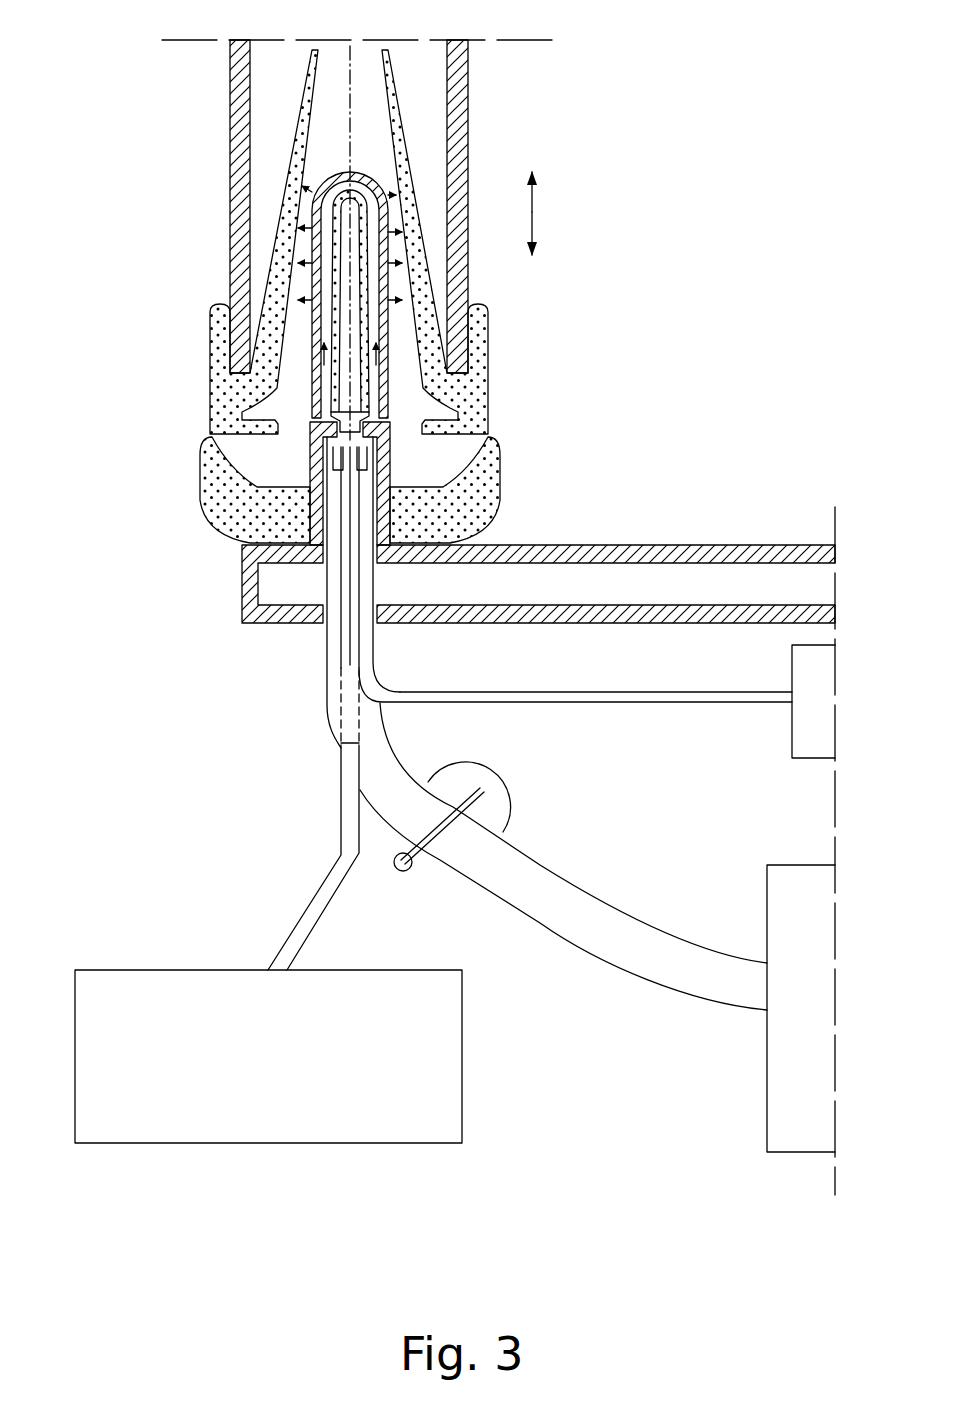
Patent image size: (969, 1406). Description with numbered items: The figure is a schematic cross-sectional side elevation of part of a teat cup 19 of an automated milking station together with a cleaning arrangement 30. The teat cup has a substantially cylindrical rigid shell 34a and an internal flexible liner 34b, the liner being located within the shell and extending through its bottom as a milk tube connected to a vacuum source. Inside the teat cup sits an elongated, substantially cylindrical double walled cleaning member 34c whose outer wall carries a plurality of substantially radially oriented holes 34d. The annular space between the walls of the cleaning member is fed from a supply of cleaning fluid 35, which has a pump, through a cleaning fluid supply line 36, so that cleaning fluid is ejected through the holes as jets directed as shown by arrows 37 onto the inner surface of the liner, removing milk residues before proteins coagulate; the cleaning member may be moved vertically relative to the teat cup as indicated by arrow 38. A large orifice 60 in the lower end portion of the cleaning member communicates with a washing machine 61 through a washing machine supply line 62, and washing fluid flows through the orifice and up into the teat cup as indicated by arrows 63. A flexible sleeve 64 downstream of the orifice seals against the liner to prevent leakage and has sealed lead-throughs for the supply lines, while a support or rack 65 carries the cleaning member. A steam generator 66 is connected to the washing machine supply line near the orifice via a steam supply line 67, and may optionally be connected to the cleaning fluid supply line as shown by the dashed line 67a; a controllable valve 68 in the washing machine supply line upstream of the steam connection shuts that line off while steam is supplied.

The teat cup 19 is at (167, 315).
The arrangement for cleaning 30 is at (168, 588).
The teat cup shell 34a is at (468, 122).
The teat cup liner 34b is at (488, 363).
The cleaning member 34c is at (345, 172).
The holes 34d is at (387, 170).
The supply of cleaning fluid 35 is at (792, 727).
The cleaning fluid supply line 36 is at (612, 702).
The arrows 37 is at (398, 300).
The arrow 38 is at (532, 212).
The orifice 60 is at (335, 463).
The washing machine 61 is at (788, 865).
The washing machine supply line 62 is at (550, 866).
The arrows 63 is at (297, 440).
The sleeve 64 is at (498, 473).
The support or rack 65 is at (700, 545).
The steam generator 66 is at (230, 970).
The steam supply line 67 is at (317, 890).
The dashed line 67a is at (343, 710).
The controllable valve 68 is at (497, 773).